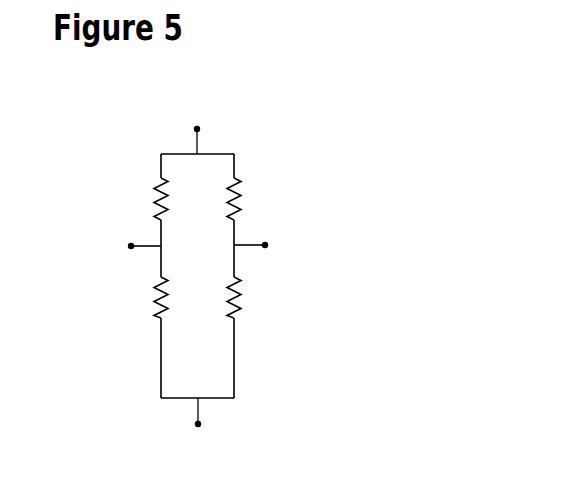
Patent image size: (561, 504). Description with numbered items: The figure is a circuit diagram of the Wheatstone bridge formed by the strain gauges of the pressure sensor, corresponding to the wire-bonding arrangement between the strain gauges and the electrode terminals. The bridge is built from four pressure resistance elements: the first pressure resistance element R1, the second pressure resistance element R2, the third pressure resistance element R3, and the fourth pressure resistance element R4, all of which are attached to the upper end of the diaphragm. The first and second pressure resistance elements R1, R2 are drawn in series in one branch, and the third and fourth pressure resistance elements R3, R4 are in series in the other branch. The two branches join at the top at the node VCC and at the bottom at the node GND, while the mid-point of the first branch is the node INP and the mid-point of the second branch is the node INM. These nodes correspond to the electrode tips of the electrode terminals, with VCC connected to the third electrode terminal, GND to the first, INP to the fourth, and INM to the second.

The first pressure resistance element R1 is at (147, 199).
The second pressure resistance element R2 is at (148, 297).
The third pressure resistance element R3 is at (247, 199).
The fourth pressure resistance element R4 is at (247, 297).
The VCC node VCC is at (193, 128).
The GND node GND is at (201, 426).
The INP node INP is at (126, 246).
The INM node INM is at (269, 246).